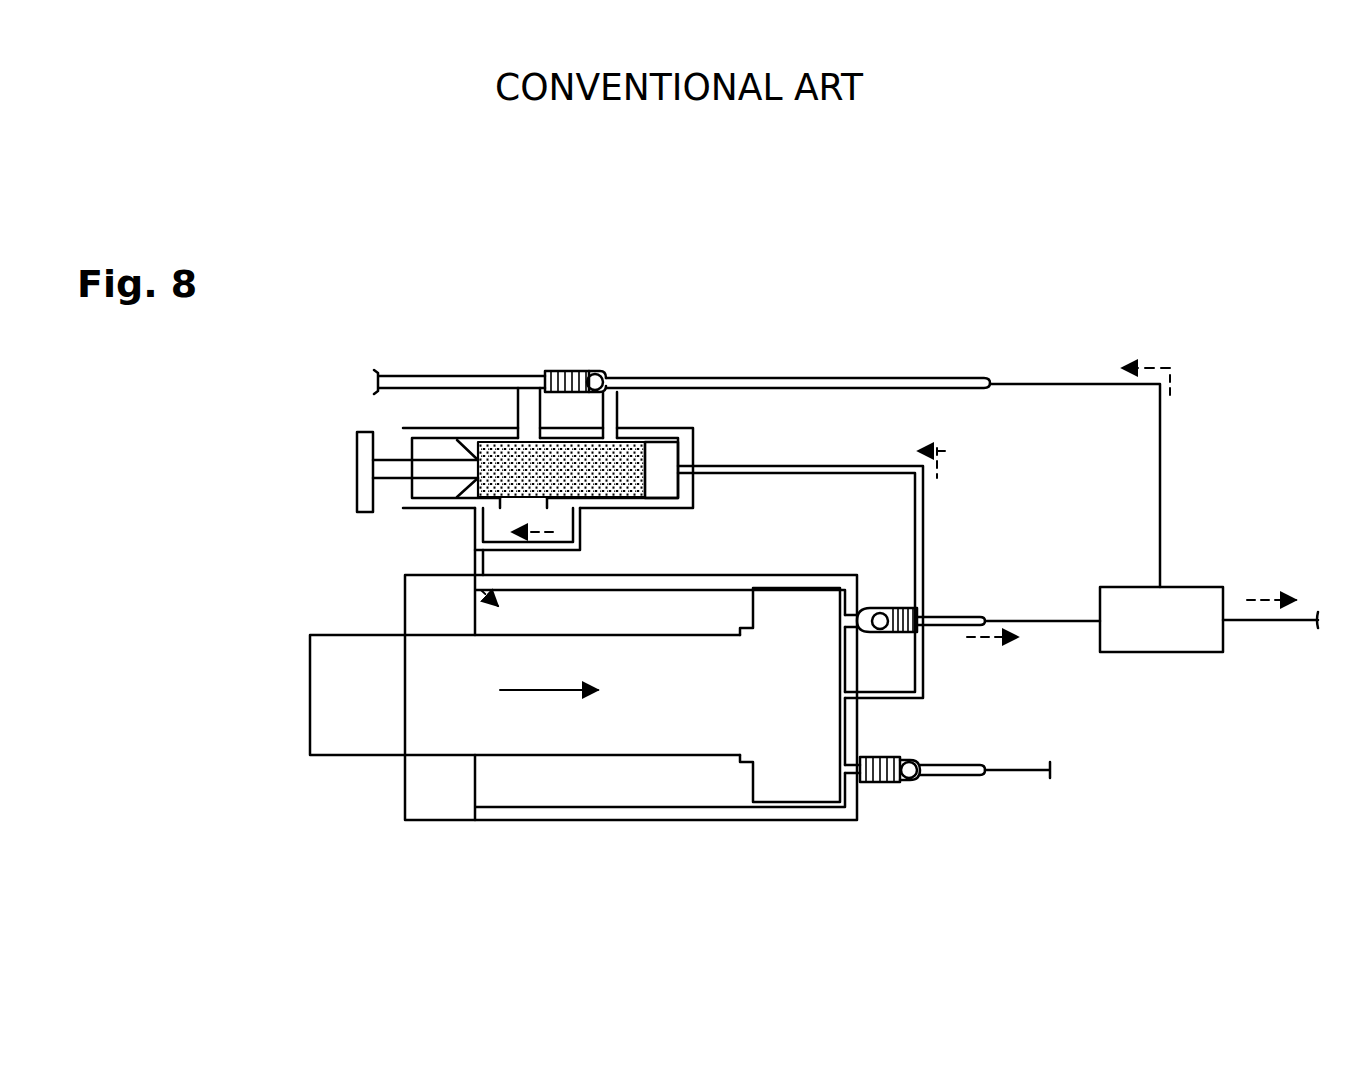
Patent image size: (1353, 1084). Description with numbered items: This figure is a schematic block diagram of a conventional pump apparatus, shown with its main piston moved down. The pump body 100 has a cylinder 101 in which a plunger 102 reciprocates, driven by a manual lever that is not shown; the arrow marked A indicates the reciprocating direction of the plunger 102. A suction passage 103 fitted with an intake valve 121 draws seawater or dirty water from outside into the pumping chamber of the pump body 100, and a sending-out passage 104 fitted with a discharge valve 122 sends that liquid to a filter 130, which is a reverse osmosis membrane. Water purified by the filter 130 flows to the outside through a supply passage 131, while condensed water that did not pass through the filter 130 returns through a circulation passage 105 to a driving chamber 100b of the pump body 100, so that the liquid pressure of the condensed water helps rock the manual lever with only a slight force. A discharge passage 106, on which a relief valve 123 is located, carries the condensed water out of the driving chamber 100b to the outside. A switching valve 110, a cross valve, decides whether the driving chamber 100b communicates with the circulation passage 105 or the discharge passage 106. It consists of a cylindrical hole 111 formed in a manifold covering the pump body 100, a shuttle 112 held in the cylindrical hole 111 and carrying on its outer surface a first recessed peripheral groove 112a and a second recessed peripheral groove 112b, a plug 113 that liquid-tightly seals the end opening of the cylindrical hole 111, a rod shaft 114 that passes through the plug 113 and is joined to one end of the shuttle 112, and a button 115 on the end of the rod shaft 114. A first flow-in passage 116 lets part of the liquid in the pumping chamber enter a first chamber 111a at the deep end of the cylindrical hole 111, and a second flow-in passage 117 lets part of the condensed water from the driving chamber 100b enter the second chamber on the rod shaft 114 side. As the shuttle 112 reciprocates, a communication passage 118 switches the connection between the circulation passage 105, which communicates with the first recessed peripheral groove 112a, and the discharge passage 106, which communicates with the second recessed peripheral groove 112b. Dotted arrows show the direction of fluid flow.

The pump body 100 is at (476, 858).
The driving chamber 100b is at (585, 790).
The cylinder 101 is at (692, 820).
The plunger 102 is at (807, 793).
The suction passage 103 is at (965, 775).
The sending-out passage 104 is at (963, 617).
The circulation passage 105 is at (870, 378).
The discharge passage 106 is at (420, 376).
The switching valve 110 is at (705, 501).
The cylindrical hole 111 is at (697, 447).
The first chamber 111a is at (660, 487).
The shuttle 112 is at (648, 442).
The first recessed peripheral groove 112a is at (600, 447).
The second recessed peripheral groove 112b is at (505, 447).
The plug 113 is at (436, 497).
The rod shaft 114 is at (393, 458).
The button 115 is at (355, 470).
The first flow-in passage 116 is at (850, 466).
The second flow-in passage 117 is at (468, 527).
The communication passage 118 is at (595, 523).
The intake valve 121 is at (891, 783).
The discharge valve 122 is at (883, 608).
The relief valve 123 is at (570, 370).
The filter 130 is at (1162, 653).
The supply passage 131 is at (1280, 622).